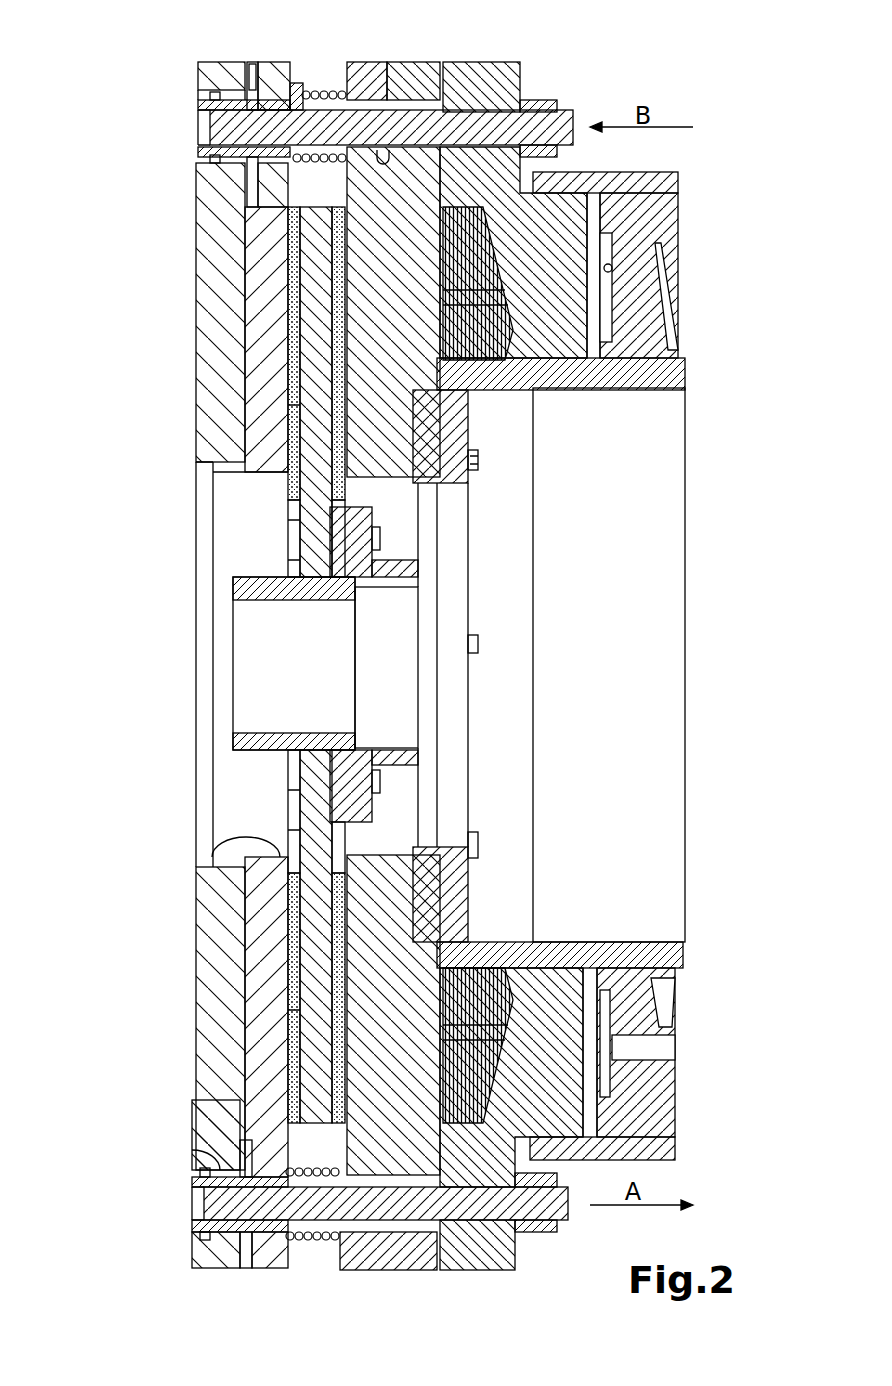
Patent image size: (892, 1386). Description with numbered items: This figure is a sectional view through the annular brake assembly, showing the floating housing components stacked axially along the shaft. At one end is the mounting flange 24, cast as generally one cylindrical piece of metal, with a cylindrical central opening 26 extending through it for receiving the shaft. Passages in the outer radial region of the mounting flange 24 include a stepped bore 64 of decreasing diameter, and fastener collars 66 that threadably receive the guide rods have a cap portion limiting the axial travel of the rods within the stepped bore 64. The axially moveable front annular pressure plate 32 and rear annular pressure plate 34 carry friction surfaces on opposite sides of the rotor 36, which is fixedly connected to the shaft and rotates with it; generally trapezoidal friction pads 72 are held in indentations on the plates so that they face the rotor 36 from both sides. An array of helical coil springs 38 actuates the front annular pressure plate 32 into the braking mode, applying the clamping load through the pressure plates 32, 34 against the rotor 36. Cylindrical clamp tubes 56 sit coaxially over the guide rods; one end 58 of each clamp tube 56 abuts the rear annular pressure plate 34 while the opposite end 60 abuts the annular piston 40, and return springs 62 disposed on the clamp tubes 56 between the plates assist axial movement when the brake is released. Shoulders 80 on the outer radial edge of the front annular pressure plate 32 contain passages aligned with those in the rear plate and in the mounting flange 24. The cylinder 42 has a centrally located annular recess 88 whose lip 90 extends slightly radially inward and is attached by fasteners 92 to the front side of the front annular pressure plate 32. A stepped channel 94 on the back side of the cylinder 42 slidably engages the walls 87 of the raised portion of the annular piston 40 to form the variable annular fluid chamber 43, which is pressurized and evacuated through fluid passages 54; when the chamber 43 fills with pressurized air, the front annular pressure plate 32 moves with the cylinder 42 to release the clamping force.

The mounting flange 24 is at (196, 265).
The cylindrical central opening 26 is at (208, 656).
The front annular pressure plate 32 is at (390, 855).
The rear annular pressure plate 34 is at (212, 857).
The rotor 36 is at (320, 207).
The helical coil springs 38 is at (490, 967).
The annular piston 40 is at (505, 62).
The cylinder 42 is at (680, 205).
The annular fluid chamber 43 is at (590, 1013).
The fluid passages 54 is at (675, 1057).
The clamp tube 56 is at (384, 160).
The one end of clamp tube 58 is at (301, 88).
The opposite end of clamp tube 60 is at (438, 63).
The return springs 62 is at (320, 93).
The stepped bore 64 is at (222, 92).
The fastener collars 66 is at (200, 97).
The friction pads 72 is at (280, 1013).
The shoulders 80 is at (377, 1272).
The walls of raised portion 87 is at (562, 962).
The annular recess 88 is at (620, 390).
The lip 90 is at (478, 445).
The fasteners 92 is at (478, 475).
The stepped channel 94 is at (612, 272).